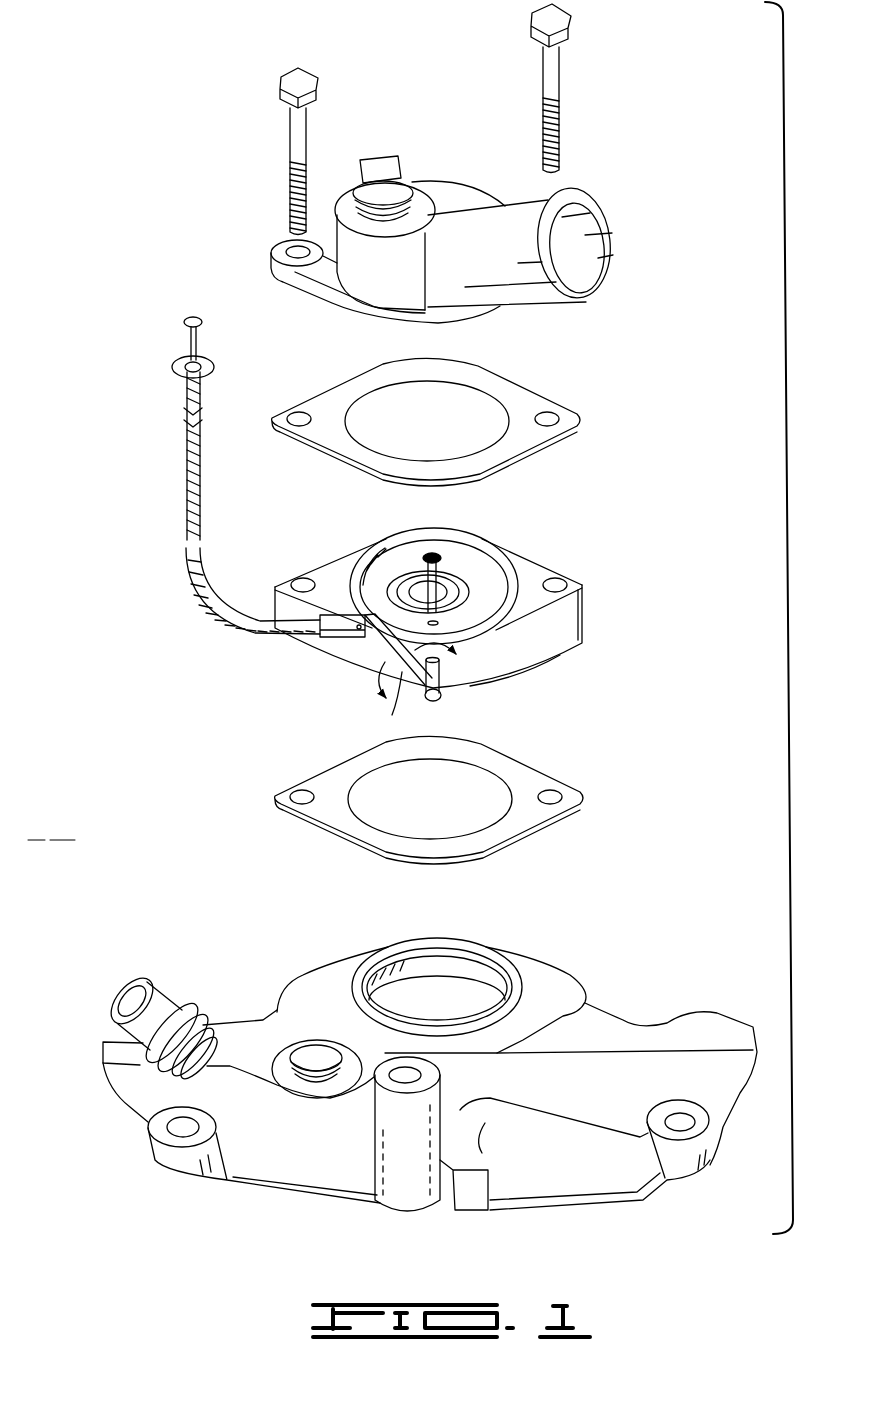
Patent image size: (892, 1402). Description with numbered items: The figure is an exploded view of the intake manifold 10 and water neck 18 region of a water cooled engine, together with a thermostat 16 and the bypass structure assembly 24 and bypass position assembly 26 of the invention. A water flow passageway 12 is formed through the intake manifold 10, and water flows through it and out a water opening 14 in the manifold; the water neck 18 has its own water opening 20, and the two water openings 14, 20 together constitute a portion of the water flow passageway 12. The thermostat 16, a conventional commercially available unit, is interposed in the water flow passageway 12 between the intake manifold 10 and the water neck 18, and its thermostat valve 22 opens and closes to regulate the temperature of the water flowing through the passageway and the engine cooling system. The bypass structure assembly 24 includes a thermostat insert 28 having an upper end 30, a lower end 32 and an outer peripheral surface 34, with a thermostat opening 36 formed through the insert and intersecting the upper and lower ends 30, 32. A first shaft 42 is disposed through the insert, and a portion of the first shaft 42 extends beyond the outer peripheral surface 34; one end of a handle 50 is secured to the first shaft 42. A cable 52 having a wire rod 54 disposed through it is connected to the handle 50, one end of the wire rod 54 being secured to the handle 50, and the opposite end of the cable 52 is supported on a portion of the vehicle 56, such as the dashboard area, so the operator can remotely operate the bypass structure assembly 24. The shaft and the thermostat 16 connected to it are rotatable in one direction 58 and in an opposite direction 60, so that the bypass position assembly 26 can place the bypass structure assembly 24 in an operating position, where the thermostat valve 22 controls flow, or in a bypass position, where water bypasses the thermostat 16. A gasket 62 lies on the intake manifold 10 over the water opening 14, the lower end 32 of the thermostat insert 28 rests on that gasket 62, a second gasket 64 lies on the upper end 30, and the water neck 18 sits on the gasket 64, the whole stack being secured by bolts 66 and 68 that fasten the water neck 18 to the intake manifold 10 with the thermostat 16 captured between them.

The intake manifold 10 is at (430, 1062).
The water flow passageway 12 is at (463, 1000).
The water opening 14 is at (383, 968).
The thermostat 16 is at (460, 616).
The water neck 18 is at (472, 221).
The water opening 20 is at (600, 258).
The thermostat valve 22 is at (450, 588).
The bypass structure assembly 24 is at (535, 562).
The bypass position assembly 26 is at (373, 650).
The thermostat insert 28 is at (566, 622).
The upper end 30 is at (586, 592).
The lower end 32 is at (522, 670).
The outer peripheral surface 34 is at (450, 660).
The thermostat opening 36 is at (372, 545).
The first shaft 42 is at (432, 700).
The handle 50 is at (392, 715).
The cable 52 is at (190, 575).
The wire rod 54 is at (198, 343).
The portion of the vehicle 56 is at (172, 361).
The one direction 58 is at (445, 692).
The opposite direction 60 is at (378, 698).
The gasket 62 is at (525, 780).
The second gasket 64 is at (530, 400).
The bolt 66 is at (280, 85).
The bolt 68 is at (572, 22).